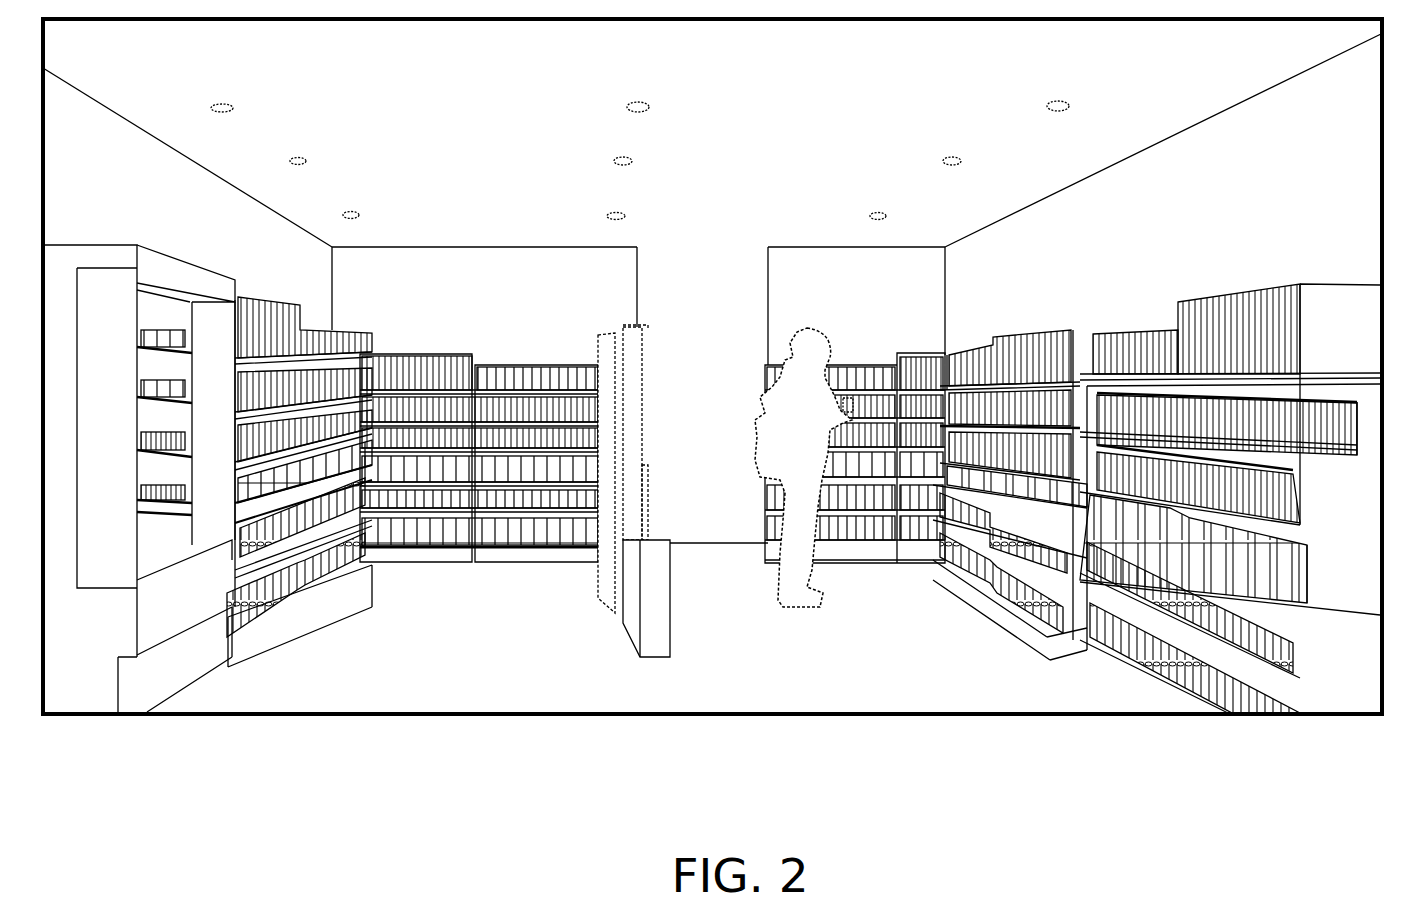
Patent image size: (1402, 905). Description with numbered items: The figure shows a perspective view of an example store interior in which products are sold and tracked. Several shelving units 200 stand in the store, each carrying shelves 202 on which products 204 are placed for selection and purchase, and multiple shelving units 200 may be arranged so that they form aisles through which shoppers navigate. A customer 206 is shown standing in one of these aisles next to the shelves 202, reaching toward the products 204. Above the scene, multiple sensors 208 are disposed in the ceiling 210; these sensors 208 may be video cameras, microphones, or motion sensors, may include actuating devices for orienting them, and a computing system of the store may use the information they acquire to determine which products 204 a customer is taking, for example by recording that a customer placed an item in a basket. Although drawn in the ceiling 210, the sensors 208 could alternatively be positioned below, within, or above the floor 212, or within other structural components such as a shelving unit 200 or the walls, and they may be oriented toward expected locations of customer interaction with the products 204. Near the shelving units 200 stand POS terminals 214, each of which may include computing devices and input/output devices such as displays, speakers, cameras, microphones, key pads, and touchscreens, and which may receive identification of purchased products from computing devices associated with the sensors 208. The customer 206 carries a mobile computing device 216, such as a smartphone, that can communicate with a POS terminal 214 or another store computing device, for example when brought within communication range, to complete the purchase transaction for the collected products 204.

The shelving unit 200 is at (228, 152).
The shelf 202 is at (175, 347).
The product 204 is at (327, 307).
The customer 206 is at (765, 410).
The sensor 208 is at (222, 103).
The ceiling 210 is at (1190, 100).
The floor 212 is at (845, 688).
The POS terminal 214 is at (612, 335).
The mobile computing device 216 is at (852, 398).